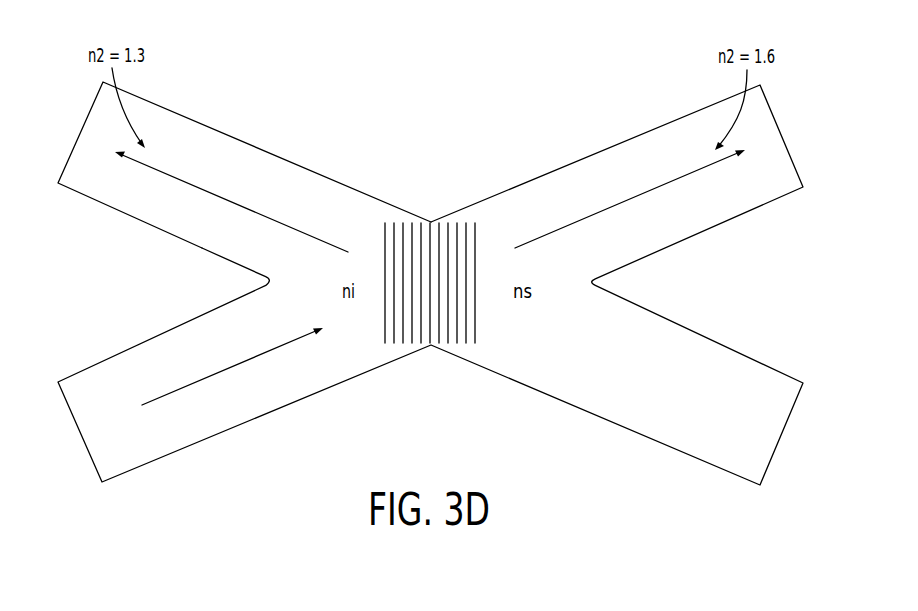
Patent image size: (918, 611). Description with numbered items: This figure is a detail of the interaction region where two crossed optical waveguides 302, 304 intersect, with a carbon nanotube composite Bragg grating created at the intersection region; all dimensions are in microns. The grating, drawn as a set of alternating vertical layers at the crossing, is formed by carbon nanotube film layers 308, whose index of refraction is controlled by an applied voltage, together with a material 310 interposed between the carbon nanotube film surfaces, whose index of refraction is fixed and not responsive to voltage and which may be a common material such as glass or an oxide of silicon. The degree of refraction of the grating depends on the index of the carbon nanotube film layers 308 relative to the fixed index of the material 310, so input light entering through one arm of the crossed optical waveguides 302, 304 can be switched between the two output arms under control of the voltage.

The optical waveguide 302 is at (791, 157).
The optical waveguide 304 is at (112, 210).
The carbon nanotube film layers 308 is at (403, 215).
The material interposed between the carbon nanotube film surfaces 310 is at (382, 214).